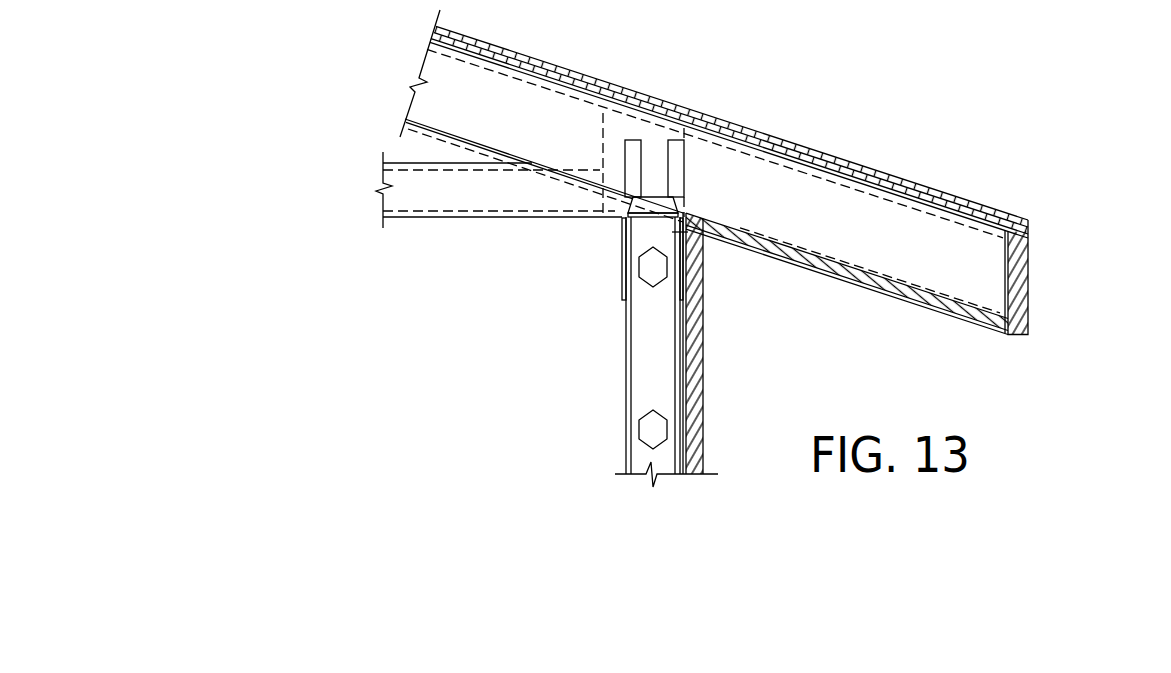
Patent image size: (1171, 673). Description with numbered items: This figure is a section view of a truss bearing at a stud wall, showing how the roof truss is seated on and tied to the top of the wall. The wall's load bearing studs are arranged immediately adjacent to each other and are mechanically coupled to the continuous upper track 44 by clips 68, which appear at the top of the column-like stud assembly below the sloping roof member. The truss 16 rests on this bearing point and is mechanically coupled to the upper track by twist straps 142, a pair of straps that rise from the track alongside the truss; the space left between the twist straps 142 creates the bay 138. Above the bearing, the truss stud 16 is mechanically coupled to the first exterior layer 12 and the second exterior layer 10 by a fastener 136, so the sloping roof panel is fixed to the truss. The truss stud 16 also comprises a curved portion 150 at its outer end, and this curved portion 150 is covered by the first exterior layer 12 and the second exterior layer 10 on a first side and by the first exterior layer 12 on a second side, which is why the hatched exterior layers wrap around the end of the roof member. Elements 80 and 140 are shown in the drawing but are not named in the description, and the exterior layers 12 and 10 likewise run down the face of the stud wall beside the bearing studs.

The second exterior layer 10 is at (958, 190).
The first exterior layer 12 is at (879, 159).
The truss 16 is at (463, 123).
The continuous upper track 44 is at (616, 247).
The clips 68 is at (623, 214).
The column 80 is at (619, 350).
The fastener 136 is at (665, 108).
The bay 138 is at (648, 160).
The clip 140 is at (703, 169).
The twist straps 142 is at (656, 166).
The curved portion 150 is at (1024, 314).